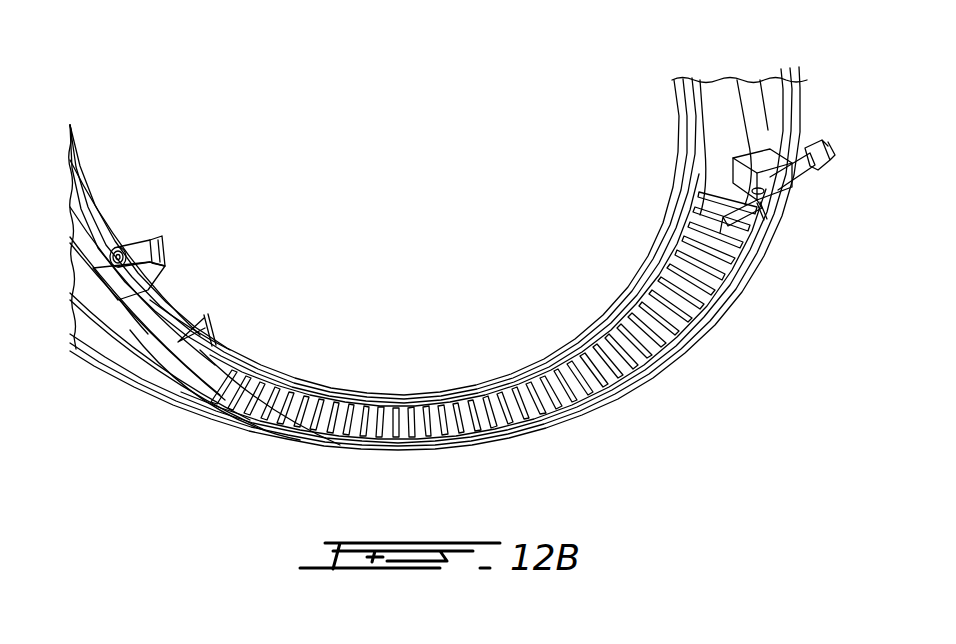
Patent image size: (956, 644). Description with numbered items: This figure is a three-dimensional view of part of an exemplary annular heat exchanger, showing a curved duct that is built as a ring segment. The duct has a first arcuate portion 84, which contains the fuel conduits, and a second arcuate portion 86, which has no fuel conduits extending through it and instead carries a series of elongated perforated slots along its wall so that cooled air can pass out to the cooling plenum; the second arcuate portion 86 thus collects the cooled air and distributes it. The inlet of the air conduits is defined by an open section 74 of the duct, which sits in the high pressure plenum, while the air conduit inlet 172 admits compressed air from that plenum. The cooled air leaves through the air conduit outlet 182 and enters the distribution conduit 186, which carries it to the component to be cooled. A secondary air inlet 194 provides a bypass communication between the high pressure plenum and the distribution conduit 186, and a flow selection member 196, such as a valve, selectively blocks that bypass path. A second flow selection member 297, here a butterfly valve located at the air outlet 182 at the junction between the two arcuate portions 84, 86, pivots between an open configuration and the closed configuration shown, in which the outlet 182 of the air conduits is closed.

The first arcuate portion 84 is at (771, 118).
The open section 74 is at (100, 338).
The secondary air inlet 194 is at (157, 340).
The second arcuate portion 86 is at (473, 331).
The distribution conduit 186 is at (542, 410).
The inlet of the air conduit 172 is at (140, 300).
The flow selection member 196 is at (208, 313).
The outlet of the air conduit 182 is at (752, 196).
The second flow selection member 297 is at (765, 226).